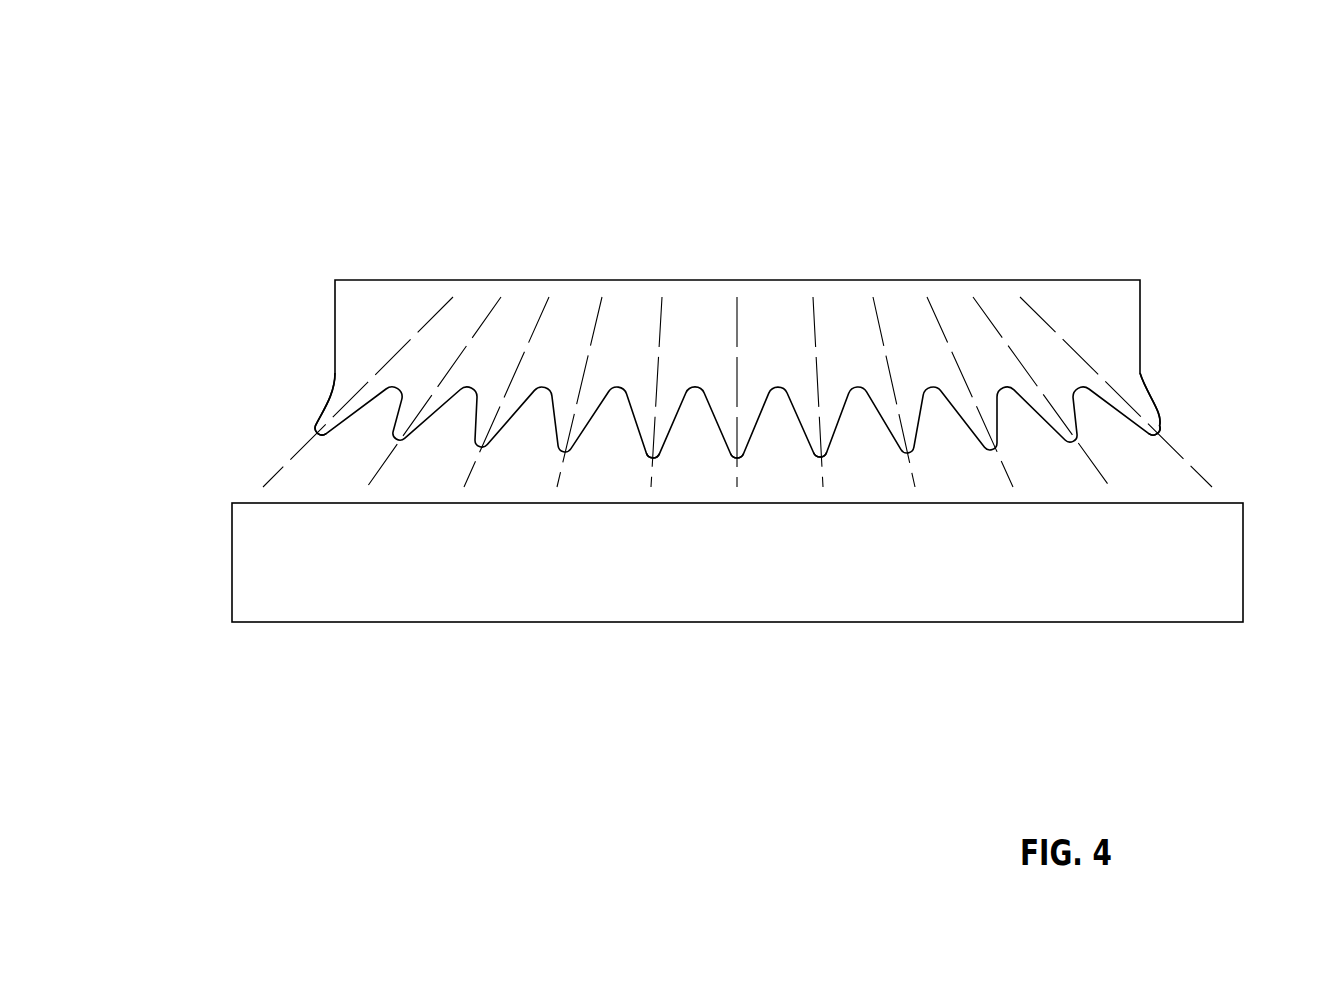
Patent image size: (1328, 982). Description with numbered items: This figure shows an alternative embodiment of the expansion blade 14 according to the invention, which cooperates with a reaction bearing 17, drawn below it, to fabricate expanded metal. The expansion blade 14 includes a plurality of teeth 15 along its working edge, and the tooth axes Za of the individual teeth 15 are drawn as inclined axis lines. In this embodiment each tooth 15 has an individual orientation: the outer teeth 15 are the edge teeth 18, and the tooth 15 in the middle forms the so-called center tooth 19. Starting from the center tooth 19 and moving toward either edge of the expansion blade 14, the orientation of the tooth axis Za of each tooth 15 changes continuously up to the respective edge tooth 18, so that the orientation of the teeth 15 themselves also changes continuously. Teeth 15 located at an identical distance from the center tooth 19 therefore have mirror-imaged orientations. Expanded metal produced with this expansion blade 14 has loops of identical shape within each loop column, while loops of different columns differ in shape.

The expansion blade 14 is at (1114, 306).
The tooth axis Za is at (549, 297).
The edge tooth 18 is at (305, 421).
The tooth 15 is at (658, 468).
The center tooth 19 is at (745, 470).
The reaction bearing 17 is at (1112, 590).